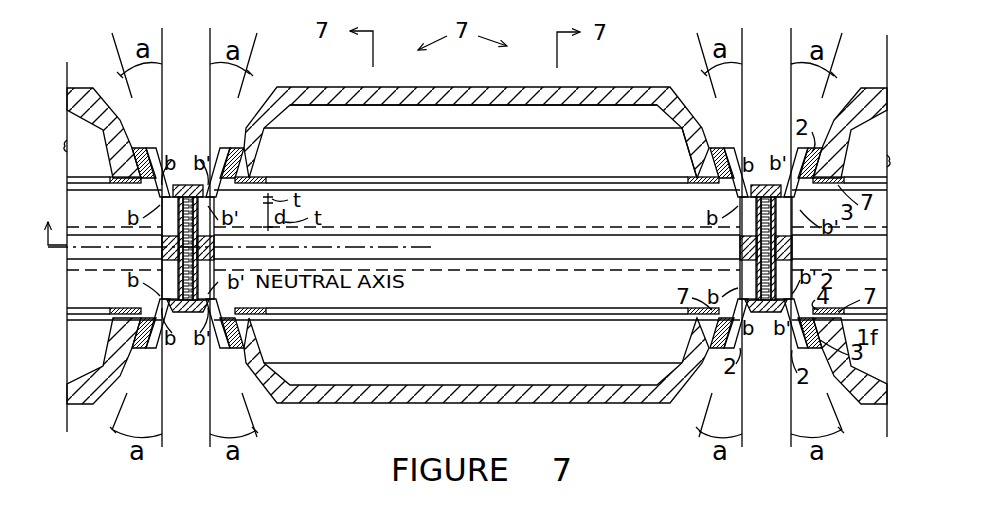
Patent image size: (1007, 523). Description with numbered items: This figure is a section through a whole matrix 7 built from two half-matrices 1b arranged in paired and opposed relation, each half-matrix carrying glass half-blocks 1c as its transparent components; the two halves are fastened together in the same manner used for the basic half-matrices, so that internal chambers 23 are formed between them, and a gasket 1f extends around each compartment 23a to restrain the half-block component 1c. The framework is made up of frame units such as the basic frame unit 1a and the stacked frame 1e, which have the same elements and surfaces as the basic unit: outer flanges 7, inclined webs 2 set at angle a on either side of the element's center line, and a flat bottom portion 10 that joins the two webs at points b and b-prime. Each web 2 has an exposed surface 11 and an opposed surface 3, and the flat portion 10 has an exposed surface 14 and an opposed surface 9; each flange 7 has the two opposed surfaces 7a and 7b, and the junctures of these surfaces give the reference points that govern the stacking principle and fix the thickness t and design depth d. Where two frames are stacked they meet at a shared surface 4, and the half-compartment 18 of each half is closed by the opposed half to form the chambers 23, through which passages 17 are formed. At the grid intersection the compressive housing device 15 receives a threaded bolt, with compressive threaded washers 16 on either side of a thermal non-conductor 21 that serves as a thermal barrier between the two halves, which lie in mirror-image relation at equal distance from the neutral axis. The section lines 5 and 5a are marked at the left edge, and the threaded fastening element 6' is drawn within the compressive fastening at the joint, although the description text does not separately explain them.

The basic frame unit 1a is at (686, 210).
The half-matrix 1b is at (667, 74).
The half-block 1c is at (458, 100).
The stacked frame 1e is at (787, 97).
The gasket 1f is at (697, 165).
The web 2 is at (738, 146).
The opposed surface of web 3 is at (823, 164).
The shared surface 4 is at (820, 185).
The section line 5- 5 is at (56, 216).
The section line 5a- 5a is at (51, 247).
The threaded bolt core 6' is at (765, 278).
The flange 7 is at (712, 185).
The flange surface 7a is at (568, 184).
The flange surface 7b is at (533, 201).
The opposed surface of flat portion 9 is at (856, 236).
The flat bottom portion 10 is at (794, 250).
The exposed surface of web 11 is at (757, 196).
The exposed surface of flat portion 14 is at (594, 203).
The female compressive device 15 is at (768, 184).
The compressive threaded washer 16 is at (738, 262).
The passage 17 is at (528, 237).
The half-compartment 18 is at (542, 211).
The thermal non-conductor 21 is at (738, 247).
The internal chamber 23 is at (620, 199).
The compartment 23a is at (548, 148).